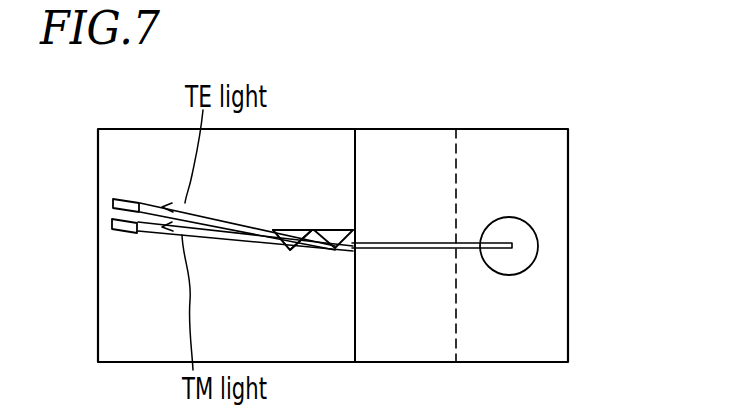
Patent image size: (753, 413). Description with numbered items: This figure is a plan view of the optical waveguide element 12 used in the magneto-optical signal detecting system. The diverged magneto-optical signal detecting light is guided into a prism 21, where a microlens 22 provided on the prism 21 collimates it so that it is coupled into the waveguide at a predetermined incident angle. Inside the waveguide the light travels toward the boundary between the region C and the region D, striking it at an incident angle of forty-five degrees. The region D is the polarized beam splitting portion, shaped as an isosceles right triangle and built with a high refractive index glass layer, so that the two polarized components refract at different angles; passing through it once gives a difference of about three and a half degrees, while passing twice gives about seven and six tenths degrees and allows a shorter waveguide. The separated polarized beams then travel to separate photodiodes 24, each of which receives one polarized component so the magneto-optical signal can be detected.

The prism 21 is at (555, 148).
The microlens 22 is at (528, 237).
The photodiode 24 is at (112, 205).
The optical waveguide element 12 is at (605, 303).
The region C is at (313, 253).
The polarized beam splitting portion (region D) D is at (337, 228).